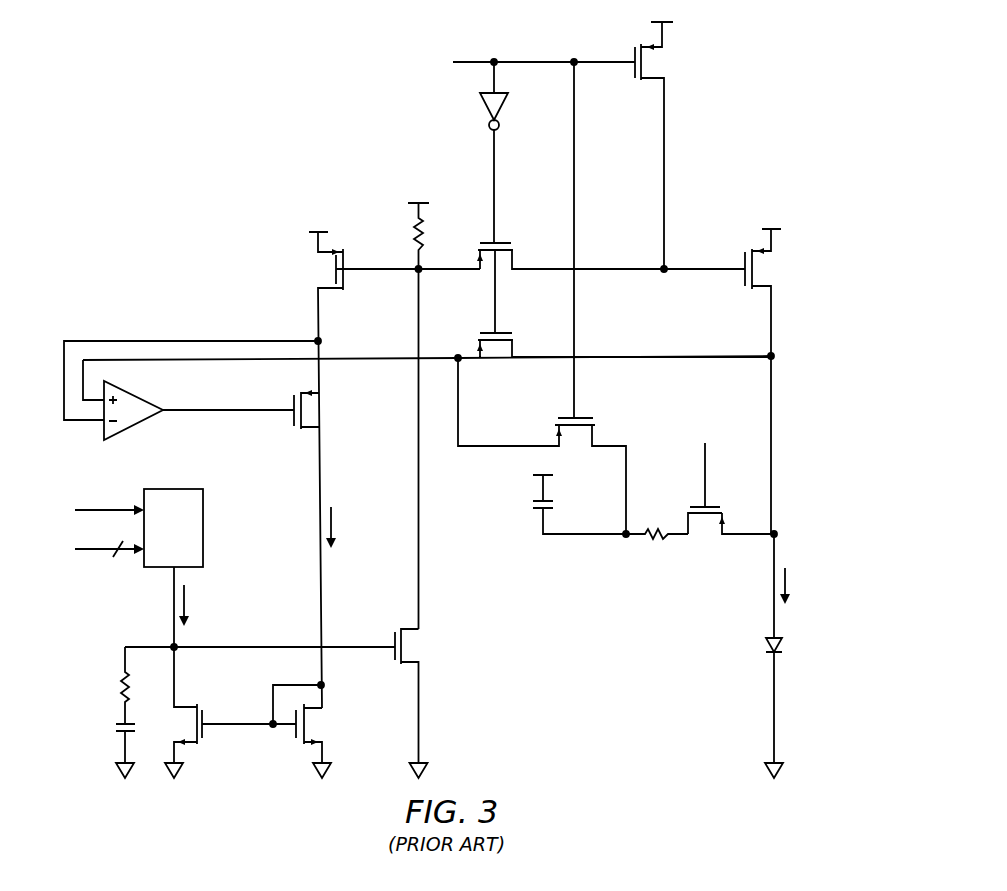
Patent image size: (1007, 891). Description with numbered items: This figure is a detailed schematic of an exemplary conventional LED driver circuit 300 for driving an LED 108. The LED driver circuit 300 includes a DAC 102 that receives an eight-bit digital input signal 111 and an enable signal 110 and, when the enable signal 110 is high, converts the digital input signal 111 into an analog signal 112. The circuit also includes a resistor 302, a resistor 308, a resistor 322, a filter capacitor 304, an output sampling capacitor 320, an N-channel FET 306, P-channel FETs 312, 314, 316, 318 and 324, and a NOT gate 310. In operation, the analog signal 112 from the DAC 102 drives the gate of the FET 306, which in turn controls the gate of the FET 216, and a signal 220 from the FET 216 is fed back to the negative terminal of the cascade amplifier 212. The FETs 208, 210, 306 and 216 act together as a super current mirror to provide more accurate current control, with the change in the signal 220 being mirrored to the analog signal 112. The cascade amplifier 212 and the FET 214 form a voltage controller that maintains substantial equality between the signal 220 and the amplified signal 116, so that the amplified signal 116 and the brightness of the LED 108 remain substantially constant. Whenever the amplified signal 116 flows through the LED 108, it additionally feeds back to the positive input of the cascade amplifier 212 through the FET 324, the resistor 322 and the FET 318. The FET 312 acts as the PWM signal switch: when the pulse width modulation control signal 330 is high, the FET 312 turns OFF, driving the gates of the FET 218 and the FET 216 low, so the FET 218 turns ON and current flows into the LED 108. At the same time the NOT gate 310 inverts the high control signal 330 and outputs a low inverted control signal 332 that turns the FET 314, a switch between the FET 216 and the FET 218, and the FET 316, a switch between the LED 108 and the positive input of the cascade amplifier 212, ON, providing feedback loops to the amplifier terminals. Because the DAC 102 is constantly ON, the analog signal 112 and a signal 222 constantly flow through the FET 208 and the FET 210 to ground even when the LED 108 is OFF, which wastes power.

The LED driver circuit 300 is at (168, 127).
The digital to analog converter 102 is at (205, 529).
The LED 108 is at (784, 648).
The enable signal 110 is at (100, 507).
The digital input signal 111 is at (94, 552).
The analog signal 112 is at (172, 643).
The amplified signal 116 is at (787, 583).
The FET 208 is at (205, 714).
The FET 210 is at (290, 736).
The cascade amplifier 212 is at (137, 431).
The FET 214 is at (292, 421).
The FET 216 is at (346, 284).
The FET 218 is at (744, 252).
The signal 220 is at (192, 341).
The signal 222 is at (336, 518).
The resistor 302 is at (118, 683).
The filter capacitor 304 is at (114, 727).
The N-channel FET 306 is at (393, 656).
The resistor 308 is at (411, 232).
The NOT gate 310 is at (481, 104).
The P-channel FET 312 is at (633, 48).
The P-channel FET 314 is at (482, 243).
The P-channel FET 316 is at (482, 333).
The P-channel FET 318 is at (568, 418).
The output sampling capacitor 320 is at (553, 506).
The resistor 322 is at (657, 542).
The P-channel FET 324 is at (715, 505).
The pulse width modulation control signal 330 is at (479, 62).
The PWM_CTRLz signal 332 is at (497, 192).